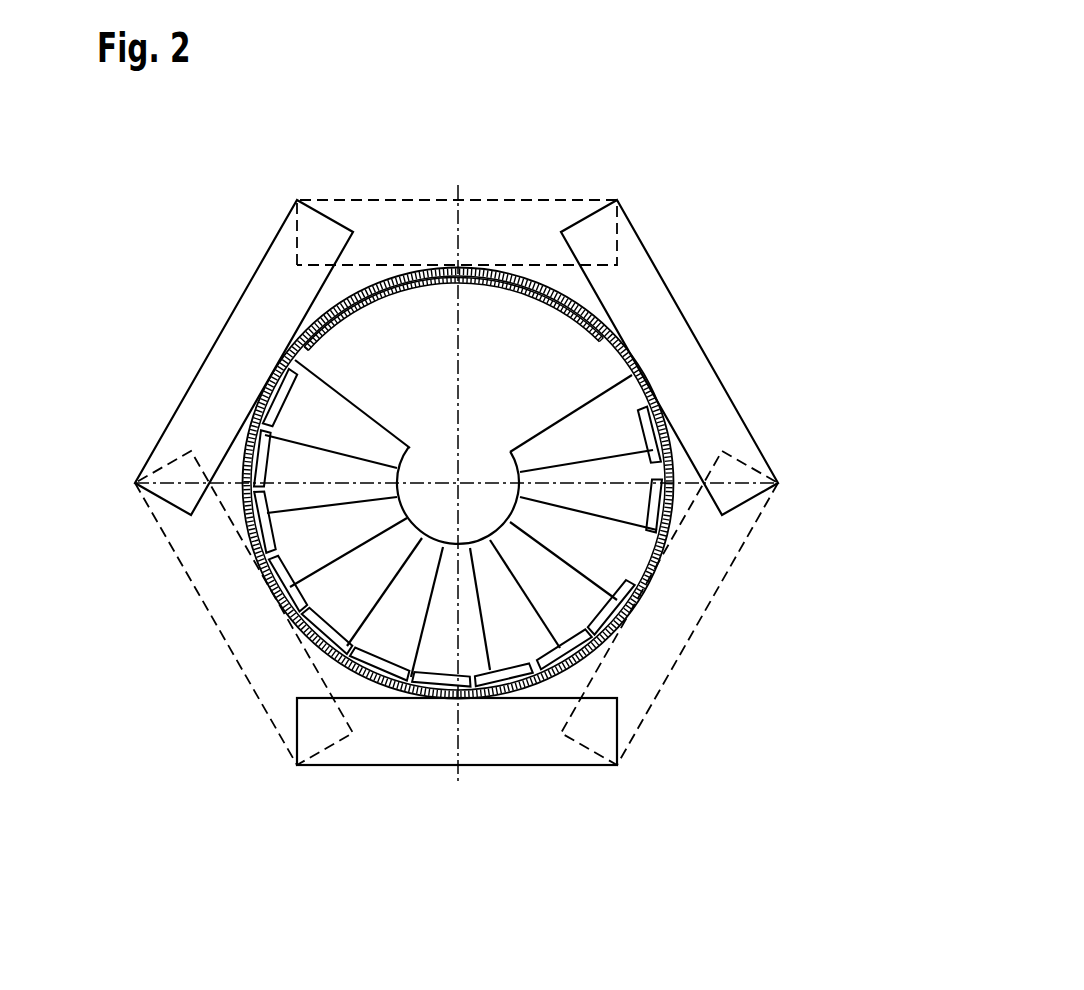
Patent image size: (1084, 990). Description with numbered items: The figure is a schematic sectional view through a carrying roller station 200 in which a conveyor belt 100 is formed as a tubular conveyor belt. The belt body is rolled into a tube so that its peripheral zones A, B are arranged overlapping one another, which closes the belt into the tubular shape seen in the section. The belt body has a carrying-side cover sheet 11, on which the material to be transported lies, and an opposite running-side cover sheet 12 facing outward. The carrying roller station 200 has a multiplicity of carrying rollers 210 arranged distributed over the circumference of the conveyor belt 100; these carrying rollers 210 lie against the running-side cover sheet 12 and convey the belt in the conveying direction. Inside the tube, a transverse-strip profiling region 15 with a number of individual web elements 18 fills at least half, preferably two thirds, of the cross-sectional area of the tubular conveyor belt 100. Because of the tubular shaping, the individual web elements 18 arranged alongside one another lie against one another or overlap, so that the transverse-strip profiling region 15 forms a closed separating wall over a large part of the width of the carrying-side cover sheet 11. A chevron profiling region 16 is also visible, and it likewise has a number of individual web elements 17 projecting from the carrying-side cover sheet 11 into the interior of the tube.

The conveyor belt 100 is at (584, 296).
The carrying-side cover sheet 11 is at (322, 332).
The running-side cover sheet 12 is at (672, 462).
The transverse-strip profiling region 15 is at (404, 426).
The chevron profiling region 16 is at (380, 642).
The individual web elements 17 is at (305, 572).
The individual web elements 18 is at (303, 533).
The carrying roller station 200 is at (824, 602).
The carrying rollers 210 is at (690, 358).
The peripheral zone A is at (528, 300).
The peripheral zone B is at (368, 275).